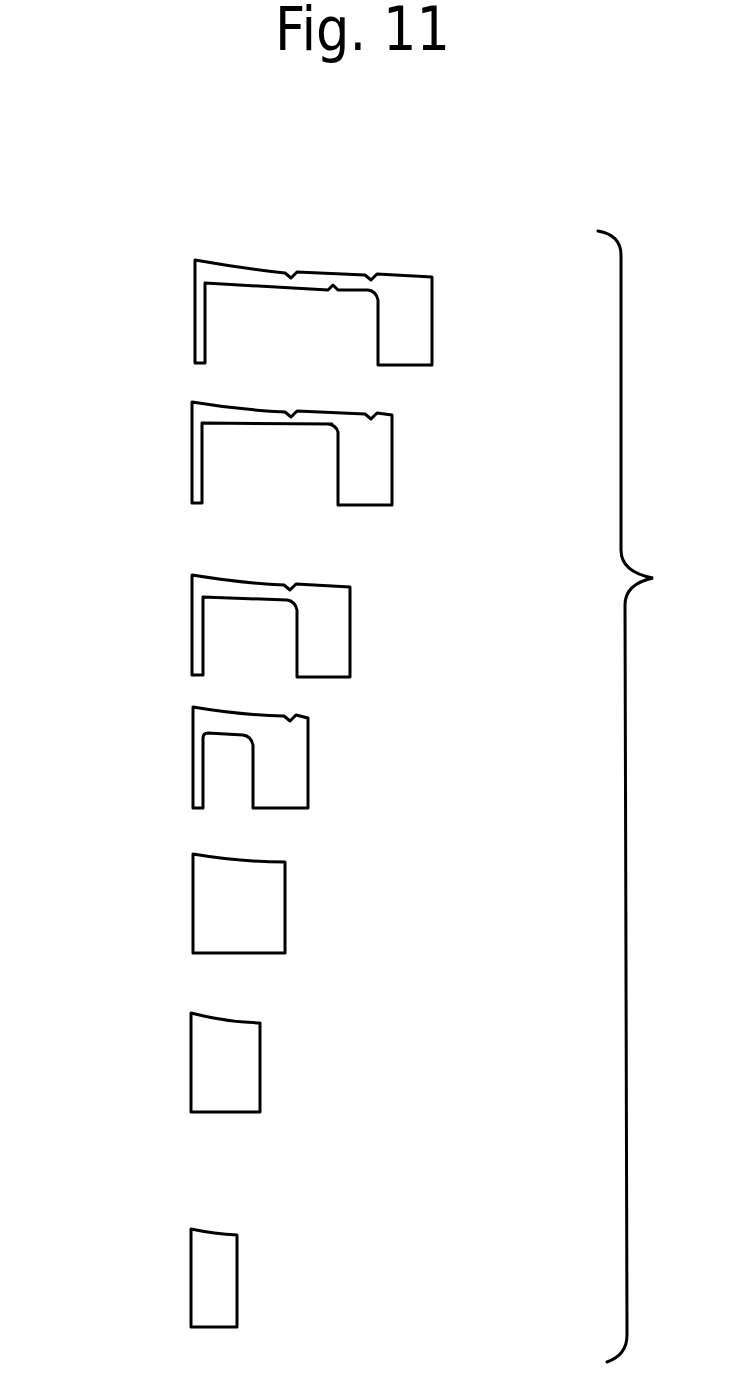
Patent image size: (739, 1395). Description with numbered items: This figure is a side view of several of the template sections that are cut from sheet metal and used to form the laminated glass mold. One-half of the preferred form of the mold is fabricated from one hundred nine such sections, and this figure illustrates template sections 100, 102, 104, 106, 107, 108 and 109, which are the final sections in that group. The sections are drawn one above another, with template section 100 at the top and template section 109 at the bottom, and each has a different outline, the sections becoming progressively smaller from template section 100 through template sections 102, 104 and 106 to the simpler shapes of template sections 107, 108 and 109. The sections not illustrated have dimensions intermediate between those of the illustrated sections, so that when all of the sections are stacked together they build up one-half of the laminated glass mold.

The template section 100 is at (195, 300).
The template section 102 is at (192, 443).
The template section 104 is at (192, 600).
The template section 106 is at (193, 783).
The template section 107 is at (193, 932).
The template section 108 is at (191, 1085).
The template section 109 is at (191, 1277).